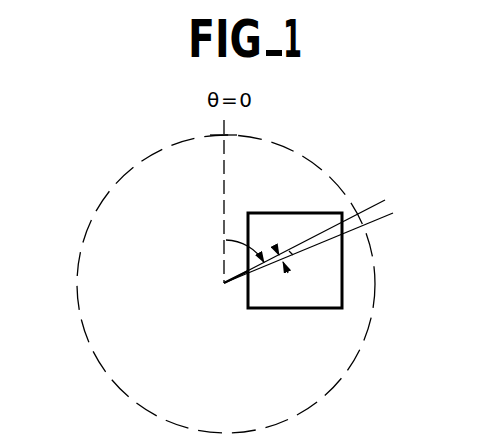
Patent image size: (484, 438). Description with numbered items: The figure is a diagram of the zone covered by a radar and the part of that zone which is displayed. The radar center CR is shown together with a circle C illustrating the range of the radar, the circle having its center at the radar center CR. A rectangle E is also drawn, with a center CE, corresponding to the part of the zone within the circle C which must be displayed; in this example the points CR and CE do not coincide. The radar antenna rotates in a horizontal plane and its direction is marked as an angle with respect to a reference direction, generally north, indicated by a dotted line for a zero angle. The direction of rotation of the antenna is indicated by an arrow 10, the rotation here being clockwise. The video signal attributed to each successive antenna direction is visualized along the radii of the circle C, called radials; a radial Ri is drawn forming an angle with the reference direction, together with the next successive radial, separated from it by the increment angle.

The arrow 10 is at (250, 284).
The circle C is at (370, 315).
The rectangle E is at (299, 308).
The radial Ri is at (368, 208).
The radar center CR is at (224, 283).
The center of the rectangle CE is at (289, 252).